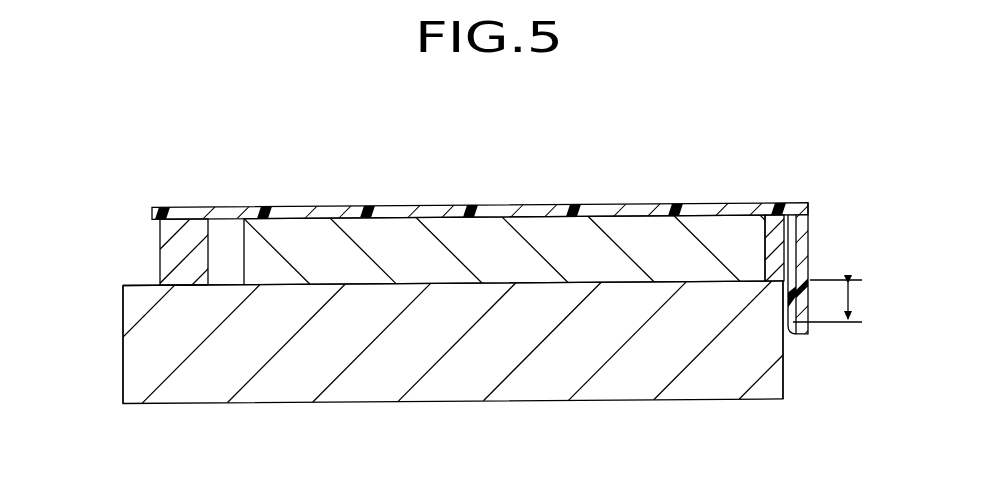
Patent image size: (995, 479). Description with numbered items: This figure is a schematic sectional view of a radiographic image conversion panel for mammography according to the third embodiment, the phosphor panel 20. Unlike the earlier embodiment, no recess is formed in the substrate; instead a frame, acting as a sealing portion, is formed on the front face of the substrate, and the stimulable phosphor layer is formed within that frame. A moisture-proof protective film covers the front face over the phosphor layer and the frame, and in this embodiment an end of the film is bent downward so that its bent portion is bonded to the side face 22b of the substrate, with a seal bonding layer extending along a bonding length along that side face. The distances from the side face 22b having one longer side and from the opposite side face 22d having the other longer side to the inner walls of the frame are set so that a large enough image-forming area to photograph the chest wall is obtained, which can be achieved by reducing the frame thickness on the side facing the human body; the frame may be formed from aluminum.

The phosphor panel 20 is at (690, 149).
The side face 22b is at (783, 380).
The side face 22d is at (123, 378).